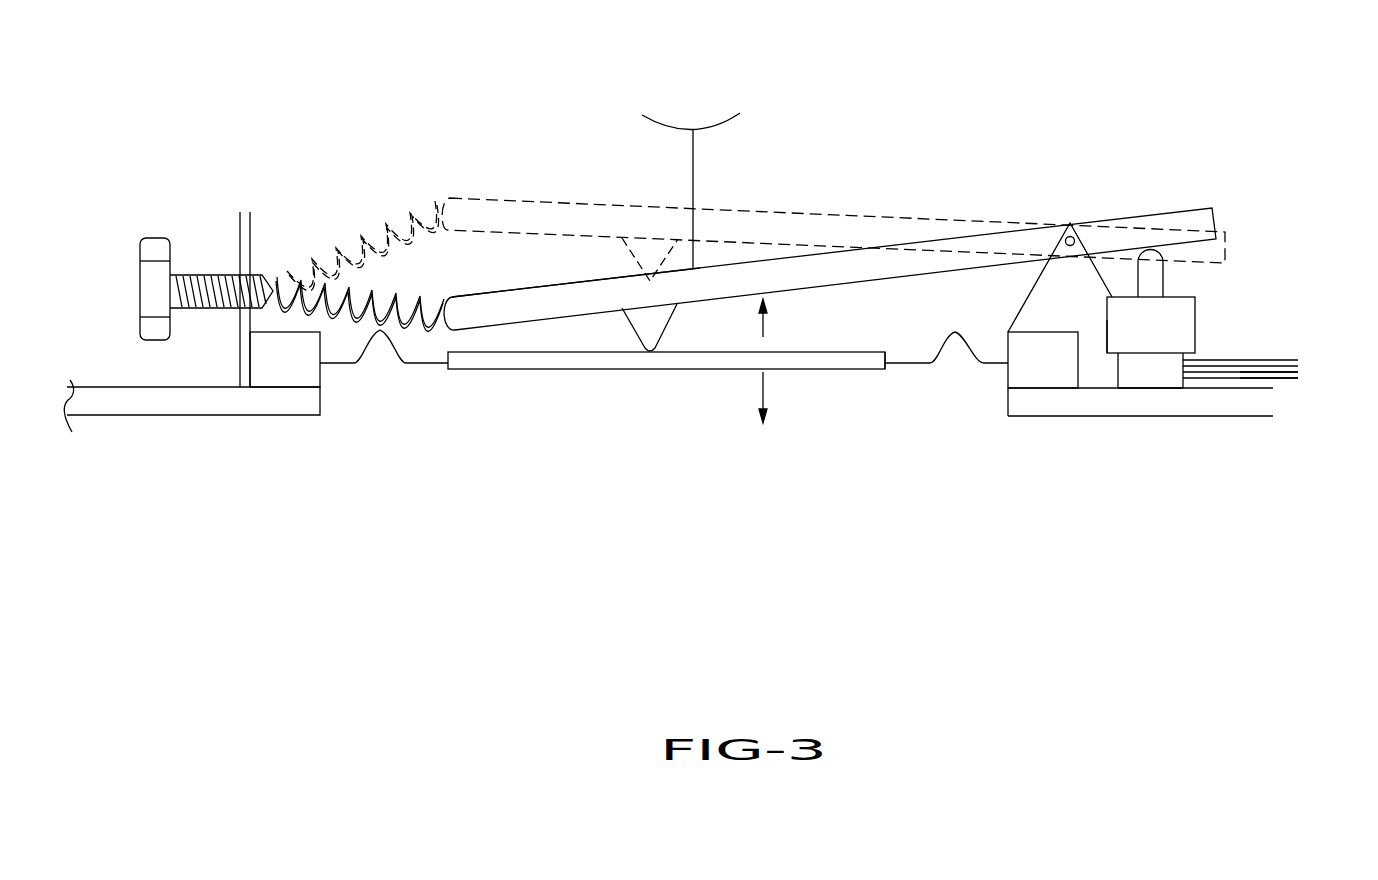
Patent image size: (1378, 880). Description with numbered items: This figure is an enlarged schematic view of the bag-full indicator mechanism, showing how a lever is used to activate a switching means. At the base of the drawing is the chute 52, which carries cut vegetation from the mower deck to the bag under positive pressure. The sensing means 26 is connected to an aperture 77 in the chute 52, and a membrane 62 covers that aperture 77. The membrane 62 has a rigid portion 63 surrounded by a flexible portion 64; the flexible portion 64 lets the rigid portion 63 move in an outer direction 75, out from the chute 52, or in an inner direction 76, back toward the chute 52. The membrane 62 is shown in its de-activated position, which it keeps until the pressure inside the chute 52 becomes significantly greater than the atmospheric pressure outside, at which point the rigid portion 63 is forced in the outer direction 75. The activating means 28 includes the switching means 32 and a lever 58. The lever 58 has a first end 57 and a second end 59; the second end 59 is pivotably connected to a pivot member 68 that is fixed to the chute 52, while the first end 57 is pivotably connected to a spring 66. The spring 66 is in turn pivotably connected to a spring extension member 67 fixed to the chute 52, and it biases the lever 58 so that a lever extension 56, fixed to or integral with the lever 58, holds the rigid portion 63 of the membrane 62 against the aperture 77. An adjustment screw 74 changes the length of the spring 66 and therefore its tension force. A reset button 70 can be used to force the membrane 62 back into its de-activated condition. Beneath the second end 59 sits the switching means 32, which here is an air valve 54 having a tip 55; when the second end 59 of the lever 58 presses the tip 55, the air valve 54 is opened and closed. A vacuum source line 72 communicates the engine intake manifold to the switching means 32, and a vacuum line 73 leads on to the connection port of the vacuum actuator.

The sensing means 26 is at (598, 447).
The activating means 28 is at (995, 152).
The switching means 32 is at (1237, 312).
The chute 52 is at (260, 405).
The air valve 54 is at (1159, 353).
The tip 55 is at (1158, 283).
The lever extension 56 is at (657, 322).
The first end 57 is at (543, 307).
The lever 58 is at (843, 255).
The second end 59 is at (1180, 208).
The membrane 62 is at (877, 370).
The rigid portion 63 is at (724, 370).
The flexible portion 64 is at (417, 367).
The spring 66 is at (357, 265).
The spring extension member 67 is at (242, 350).
The pivot member 68 is at (1093, 342).
The reset button 70 is at (700, 130).
The vacuum source line 72 is at (1253, 362).
The vacuum line 73 is at (1337, 378).
The adjustment screw 74 is at (153, 247).
The outer direction 75 is at (764, 337).
The inner direction 76 is at (764, 383).
The aperture 77 is at (1005, 400).